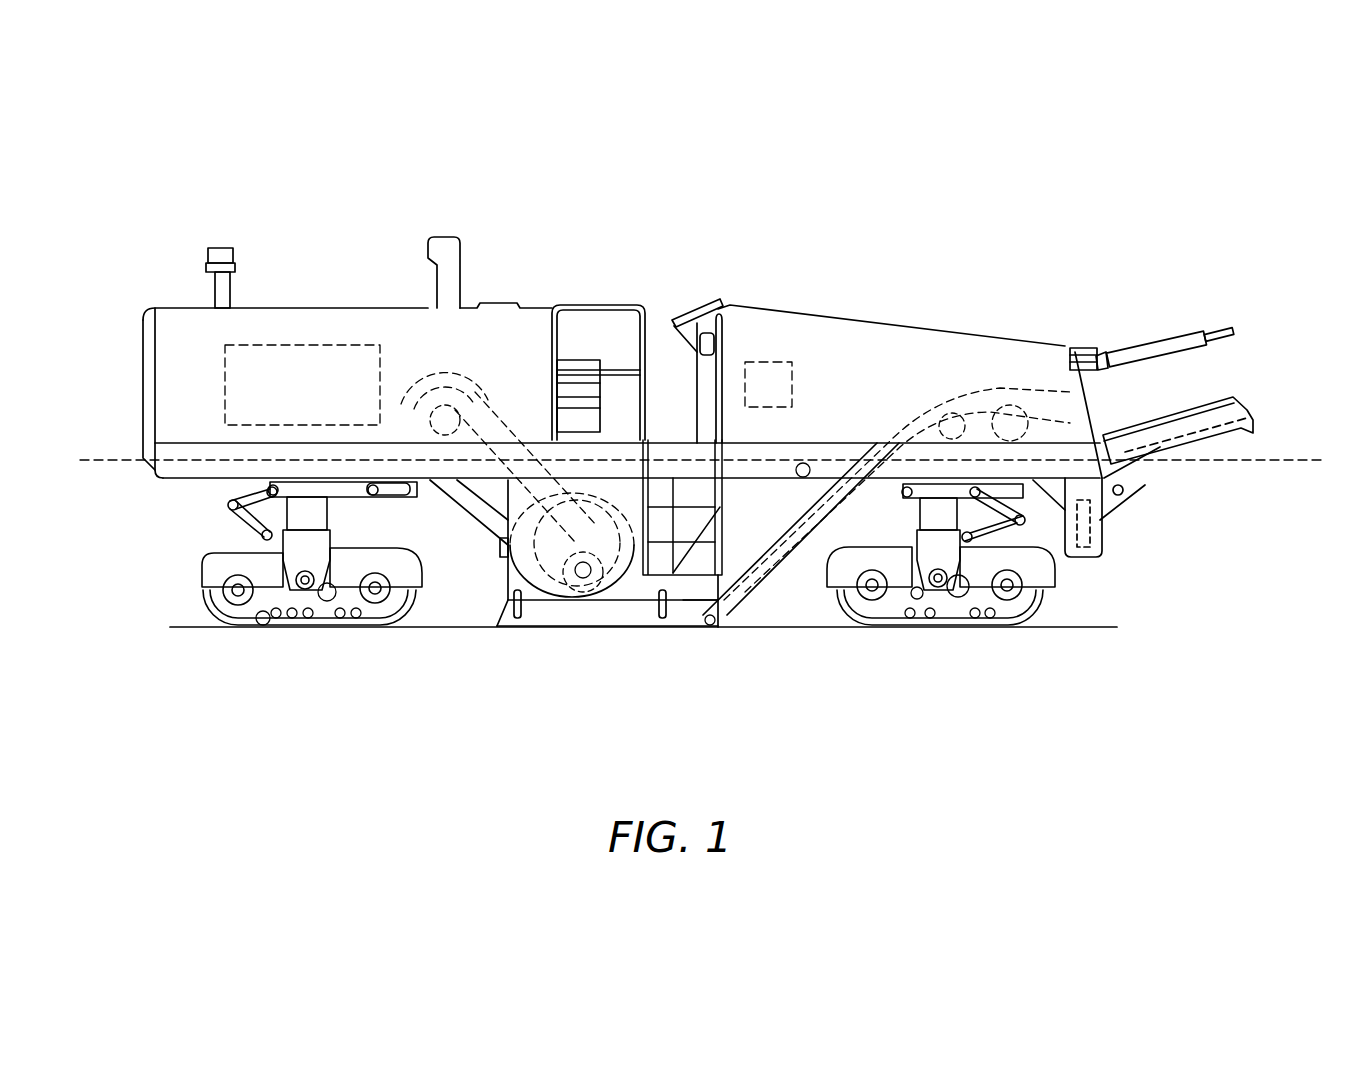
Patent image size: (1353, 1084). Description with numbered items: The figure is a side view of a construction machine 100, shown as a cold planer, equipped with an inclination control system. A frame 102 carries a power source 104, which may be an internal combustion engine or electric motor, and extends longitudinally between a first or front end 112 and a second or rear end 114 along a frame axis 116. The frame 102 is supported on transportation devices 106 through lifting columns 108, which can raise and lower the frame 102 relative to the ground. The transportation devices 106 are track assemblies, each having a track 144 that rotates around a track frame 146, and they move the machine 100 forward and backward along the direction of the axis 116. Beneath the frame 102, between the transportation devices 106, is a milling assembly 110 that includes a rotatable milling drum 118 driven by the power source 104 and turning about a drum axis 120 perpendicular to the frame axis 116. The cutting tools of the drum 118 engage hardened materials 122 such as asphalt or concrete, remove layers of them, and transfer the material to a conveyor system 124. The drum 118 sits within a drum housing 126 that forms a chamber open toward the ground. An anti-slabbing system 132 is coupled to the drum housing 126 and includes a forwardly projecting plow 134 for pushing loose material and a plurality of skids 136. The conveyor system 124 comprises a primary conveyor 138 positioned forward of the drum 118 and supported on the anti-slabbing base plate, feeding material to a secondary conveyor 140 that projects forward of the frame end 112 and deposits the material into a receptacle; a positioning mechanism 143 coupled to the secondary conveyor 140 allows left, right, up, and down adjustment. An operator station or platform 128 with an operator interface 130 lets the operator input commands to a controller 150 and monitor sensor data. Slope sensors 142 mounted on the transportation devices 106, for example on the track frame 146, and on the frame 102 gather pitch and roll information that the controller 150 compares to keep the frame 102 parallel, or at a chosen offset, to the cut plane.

The construction machine 100 is at (1118, 210).
The frame 102 is at (168, 484).
The power source 104 is at (297, 358).
The transportation devices 106 is at (210, 613).
The lifting columns 108 is at (324, 506).
The milling assembly 110 is at (484, 540).
The first end 112 is at (1107, 432).
The second end 114 is at (150, 462).
The frame axis 116 is at (1305, 462).
The milling drum 118 is at (635, 602).
The drum axis 120 is at (590, 598).
The hardened materials 122 is at (1130, 616).
The conveyor system 124 is at (915, 382).
The drum housing 126 is at (607, 490).
The operator station 128 is at (660, 304).
The operator interface 130 is at (688, 318).
The anti-slabbing system 132 is at (734, 614).
The plow 134 is at (712, 628).
The skids 136 is at (667, 628).
The primary conveyor 138 is at (780, 567).
The secondary conveyor 140 is at (1208, 435).
The slope sensors 142 is at (797, 475).
The positioning mechanism 143 is at (1189, 313).
The track 144 is at (338, 622).
The track frame 146 is at (270, 618).
The controller 150 is at (770, 375).